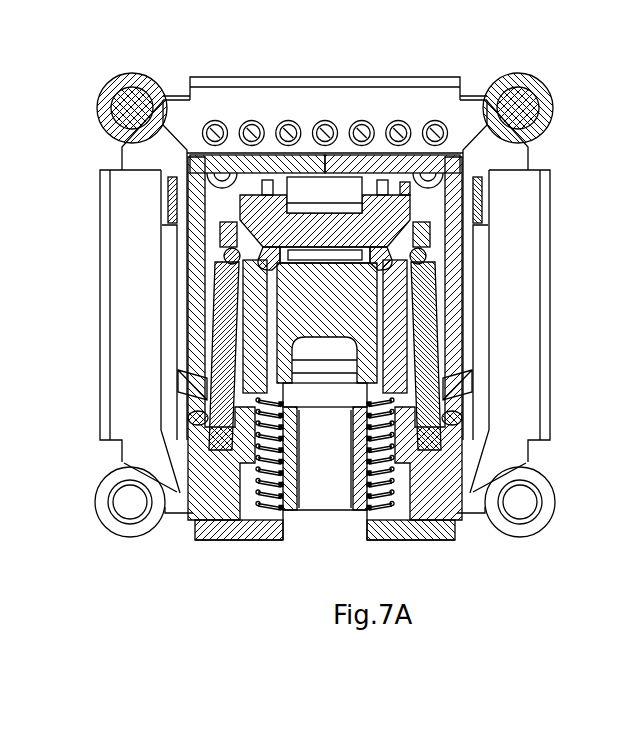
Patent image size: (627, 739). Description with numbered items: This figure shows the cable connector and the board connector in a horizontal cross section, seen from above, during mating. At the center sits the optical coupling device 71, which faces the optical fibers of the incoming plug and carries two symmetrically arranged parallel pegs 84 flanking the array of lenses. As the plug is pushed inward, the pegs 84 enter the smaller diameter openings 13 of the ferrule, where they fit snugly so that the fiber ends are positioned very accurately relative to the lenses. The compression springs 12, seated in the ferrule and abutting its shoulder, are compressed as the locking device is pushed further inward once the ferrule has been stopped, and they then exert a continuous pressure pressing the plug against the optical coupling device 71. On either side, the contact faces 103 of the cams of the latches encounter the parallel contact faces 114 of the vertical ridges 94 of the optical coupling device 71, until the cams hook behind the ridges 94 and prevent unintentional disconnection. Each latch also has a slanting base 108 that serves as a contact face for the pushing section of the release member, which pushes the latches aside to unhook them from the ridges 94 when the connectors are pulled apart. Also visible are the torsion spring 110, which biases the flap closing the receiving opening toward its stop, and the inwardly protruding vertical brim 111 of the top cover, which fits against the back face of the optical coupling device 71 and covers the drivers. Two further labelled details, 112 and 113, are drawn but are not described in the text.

The compression spring 12 is at (388, 503).
The opening of a smaller diameter 13 is at (272, 334).
The optical coupling device 71 is at (317, 236).
The peg 84 is at (278, 262).
The vertical ridge 94 is at (413, 207).
The contact face 103 is at (222, 225).
The slanting base 108 is at (213, 403).
The torsion spring 110 is at (212, 301).
The vertical brim 111 is at (195, 378).
The lip 112 is at (398, 250).
The retaining ring 113 is at (428, 228).
The contact face 114 is at (237, 217).